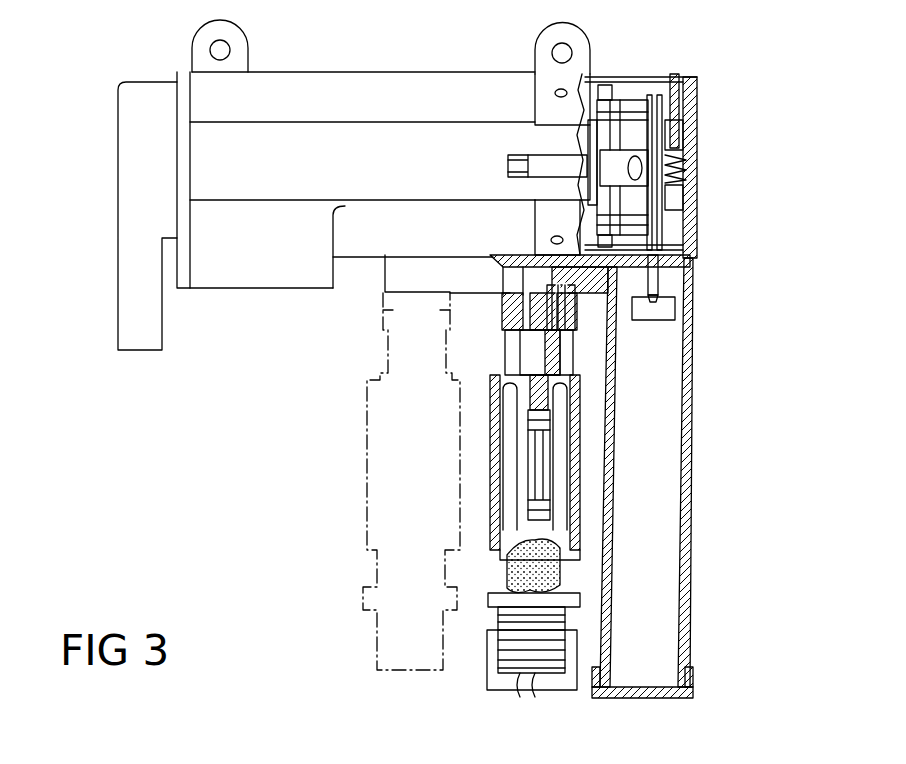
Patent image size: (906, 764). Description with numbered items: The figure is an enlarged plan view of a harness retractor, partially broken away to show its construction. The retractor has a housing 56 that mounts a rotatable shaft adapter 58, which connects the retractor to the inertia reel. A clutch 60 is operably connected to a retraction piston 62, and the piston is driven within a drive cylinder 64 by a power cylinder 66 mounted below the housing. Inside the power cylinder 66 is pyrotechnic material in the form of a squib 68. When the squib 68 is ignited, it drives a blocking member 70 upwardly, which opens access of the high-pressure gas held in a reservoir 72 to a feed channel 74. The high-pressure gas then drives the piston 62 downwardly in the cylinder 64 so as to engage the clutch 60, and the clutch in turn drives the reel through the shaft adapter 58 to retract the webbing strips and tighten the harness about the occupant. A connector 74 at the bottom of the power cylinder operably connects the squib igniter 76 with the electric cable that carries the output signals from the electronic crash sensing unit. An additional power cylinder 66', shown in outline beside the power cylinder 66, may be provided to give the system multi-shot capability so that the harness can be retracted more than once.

The housing 56 is at (340, 87).
The shaft adapter 58 is at (587, 135).
The clutch 60 is at (633, 123).
The retraction piston 62 is at (683, 311).
The drive cylinder 64 is at (692, 353).
The power cylinder 66 is at (488, 468).
The additional power cylinder 66' is at (361, 481).
The squib 68 is at (507, 575).
The blocking member 70 is at (545, 413).
The reservoir 72 is at (502, 420).
The feed channel 74 is at (683, 251).
The squib igniter 76 is at (498, 616).